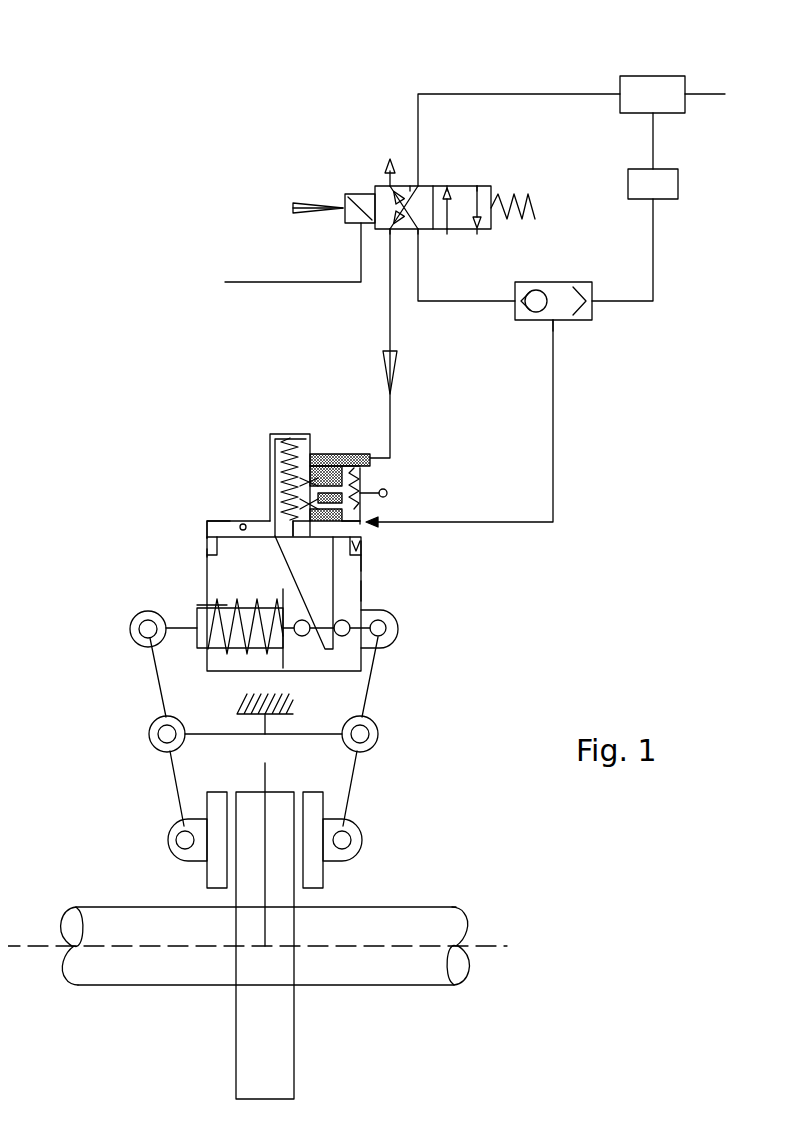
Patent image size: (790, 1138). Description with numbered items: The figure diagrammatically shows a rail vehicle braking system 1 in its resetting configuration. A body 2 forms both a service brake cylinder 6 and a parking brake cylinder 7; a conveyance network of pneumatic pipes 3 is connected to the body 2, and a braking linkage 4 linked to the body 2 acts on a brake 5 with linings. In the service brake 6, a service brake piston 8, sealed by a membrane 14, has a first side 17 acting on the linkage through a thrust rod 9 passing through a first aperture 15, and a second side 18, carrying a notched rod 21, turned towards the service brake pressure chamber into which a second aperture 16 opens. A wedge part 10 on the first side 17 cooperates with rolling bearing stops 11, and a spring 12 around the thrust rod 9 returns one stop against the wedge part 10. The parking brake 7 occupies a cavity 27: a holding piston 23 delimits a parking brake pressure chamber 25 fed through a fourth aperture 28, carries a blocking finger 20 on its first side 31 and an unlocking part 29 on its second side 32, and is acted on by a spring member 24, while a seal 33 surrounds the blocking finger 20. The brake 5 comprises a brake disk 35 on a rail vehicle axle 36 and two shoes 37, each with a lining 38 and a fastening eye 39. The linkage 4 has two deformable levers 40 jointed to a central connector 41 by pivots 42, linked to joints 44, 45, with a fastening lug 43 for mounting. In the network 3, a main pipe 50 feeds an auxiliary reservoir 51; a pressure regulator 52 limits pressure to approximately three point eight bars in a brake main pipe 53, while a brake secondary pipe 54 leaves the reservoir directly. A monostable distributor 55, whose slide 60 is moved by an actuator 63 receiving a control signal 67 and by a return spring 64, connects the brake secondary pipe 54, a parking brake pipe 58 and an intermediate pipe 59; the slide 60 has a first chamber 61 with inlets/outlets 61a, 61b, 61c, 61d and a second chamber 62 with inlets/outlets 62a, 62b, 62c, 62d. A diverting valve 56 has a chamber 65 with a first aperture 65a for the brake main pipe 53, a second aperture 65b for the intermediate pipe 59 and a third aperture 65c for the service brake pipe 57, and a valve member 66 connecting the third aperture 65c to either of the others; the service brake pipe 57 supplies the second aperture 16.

The rail vehicle braking system 1 is at (134, 349).
The body 2 is at (362, 608).
The conveyance network of pneumatic pipes 3 is at (246, 103).
The braking linkage 4 is at (73, 690).
The brake 5 is at (100, 832).
The service brake cylinder 6 is at (86, 570).
The parking brake cylinder 7 is at (364, 376).
The service brake piston 8 is at (222, 520).
The thrust rod 9 is at (197, 610).
The wedge part 10 is at (320, 570).
The rolling bearing stops 11 is at (328, 662).
The spring 12 is at (250, 652).
The membrane 14 is at (362, 550).
The first aperture 15 is at (188, 648).
The second aperture 16 is at (212, 541).
The first side 17 is at (207, 548).
The second side 18 is at (243, 520).
The blocking finger 20 is at (330, 452).
The notched rod 21 is at (276, 433).
The holding piston 23 is at (355, 537).
The spring member 24 is at (372, 516).
The parking brake pressure chamber 25 is at (340, 452).
The cavity 27 is at (352, 472).
The fourth aperture 28 is at (372, 452).
The unlocking part 29 is at (387, 492).
The first side 31 is at (328, 540).
The second side 32 is at (348, 453).
The seal 33 is at (306, 477).
The brake disk 35 is at (236, 1045).
The rail vehicle axle 36 is at (94, 985).
The shoes 37 is at (263, 822).
The lining 38 is at (216, 800).
The fastening eye 39 is at (178, 853).
The deformable levers 40 is at (170, 775).
The central connector 41 is at (300, 738).
The pivots 42 is at (149, 733).
The fastening lug 43 is at (238, 703).
The joint 44 is at (130, 627).
The joint 45 is at (398, 628).
The main pipe 50 is at (713, 92).
The auxiliary reservoir 51 is at (652, 80).
The pressure regulator 52 is at (677, 183).
The brake main pipe 53 is at (656, 244).
The brake secondary pipe 54 is at (575, 92).
The monostable distributor 55 is at (358, 146).
The diverting valve 56 is at (553, 287).
The service brake pipe 57 is at (553, 470).
The parking brake pipe 58 is at (389, 297).
The intermediate pipe 59 is at (436, 302).
The movable slide 60 is at (492, 186).
The first chamber 61 is at (421, 185).
The first exhaust outlet 61a is at (388, 162).
The first supply inlet 61b is at (410, 185).
The first parking brake outlet 61c is at (385, 230).
The first service brake outlet 61d is at (419, 232).
The second chamber 62 is at (430, 185).
The second exhaust outlet 62a is at (443, 185).
The second supply inlet 62b is at (478, 185).
The second parking brake outlet 62c is at (448, 230).
The second service brake outlet 62d is at (482, 230).
The actuator 63 is at (350, 193).
The return spring 64 is at (530, 200).
The chamber 65 is at (563, 290).
The first aperture 65a is at (592, 300).
The second aperture 65b is at (517, 305).
The third aperture 65c is at (556, 321).
The valve member 66 is at (520, 292).
The control signal 67 is at (252, 281).